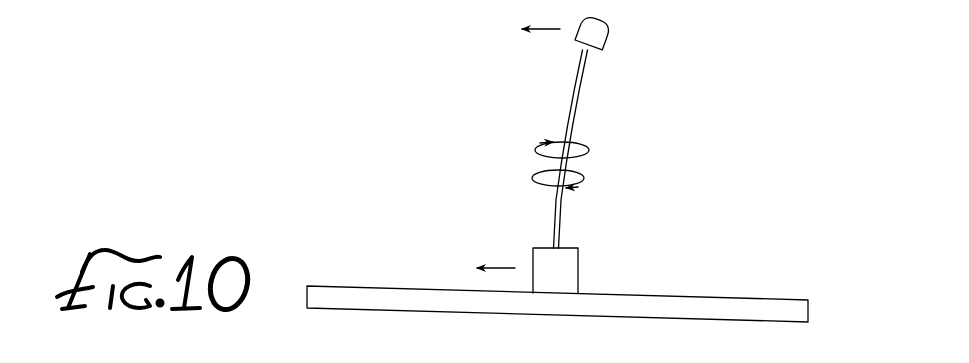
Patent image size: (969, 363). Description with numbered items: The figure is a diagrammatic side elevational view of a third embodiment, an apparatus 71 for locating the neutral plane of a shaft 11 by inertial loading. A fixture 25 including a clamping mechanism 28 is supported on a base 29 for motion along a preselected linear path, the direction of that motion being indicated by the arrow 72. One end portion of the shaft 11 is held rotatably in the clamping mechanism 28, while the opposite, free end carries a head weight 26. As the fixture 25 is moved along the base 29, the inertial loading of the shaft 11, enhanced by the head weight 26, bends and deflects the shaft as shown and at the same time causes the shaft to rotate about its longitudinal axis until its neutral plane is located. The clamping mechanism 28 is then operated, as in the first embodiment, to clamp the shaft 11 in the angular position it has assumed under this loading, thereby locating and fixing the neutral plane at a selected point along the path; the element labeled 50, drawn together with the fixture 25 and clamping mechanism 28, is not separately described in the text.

The head 26 is at (600, 42).
The stem / shaft 11 is at (575, 120).
The rotation direction 71 is at (627, 194).
The translation direction 72 is at (503, 268).
The base block 25 is at (640, 270).
The base block 28 is at (640, 270).
The base block 50 is at (582, 272).
The board / substrate 29 is at (430, 310).